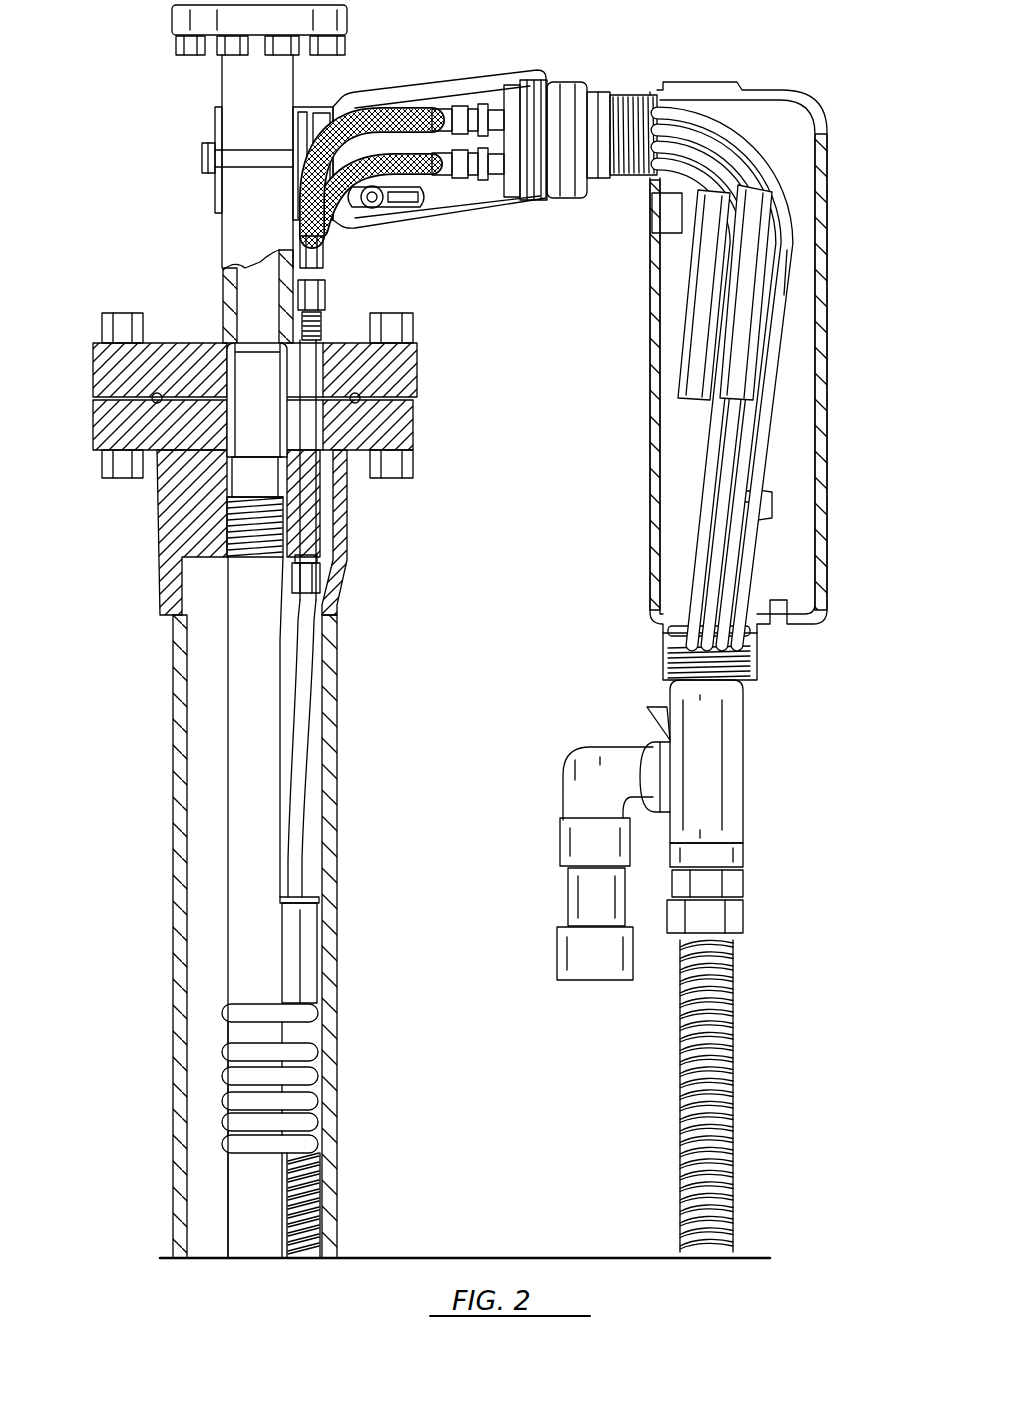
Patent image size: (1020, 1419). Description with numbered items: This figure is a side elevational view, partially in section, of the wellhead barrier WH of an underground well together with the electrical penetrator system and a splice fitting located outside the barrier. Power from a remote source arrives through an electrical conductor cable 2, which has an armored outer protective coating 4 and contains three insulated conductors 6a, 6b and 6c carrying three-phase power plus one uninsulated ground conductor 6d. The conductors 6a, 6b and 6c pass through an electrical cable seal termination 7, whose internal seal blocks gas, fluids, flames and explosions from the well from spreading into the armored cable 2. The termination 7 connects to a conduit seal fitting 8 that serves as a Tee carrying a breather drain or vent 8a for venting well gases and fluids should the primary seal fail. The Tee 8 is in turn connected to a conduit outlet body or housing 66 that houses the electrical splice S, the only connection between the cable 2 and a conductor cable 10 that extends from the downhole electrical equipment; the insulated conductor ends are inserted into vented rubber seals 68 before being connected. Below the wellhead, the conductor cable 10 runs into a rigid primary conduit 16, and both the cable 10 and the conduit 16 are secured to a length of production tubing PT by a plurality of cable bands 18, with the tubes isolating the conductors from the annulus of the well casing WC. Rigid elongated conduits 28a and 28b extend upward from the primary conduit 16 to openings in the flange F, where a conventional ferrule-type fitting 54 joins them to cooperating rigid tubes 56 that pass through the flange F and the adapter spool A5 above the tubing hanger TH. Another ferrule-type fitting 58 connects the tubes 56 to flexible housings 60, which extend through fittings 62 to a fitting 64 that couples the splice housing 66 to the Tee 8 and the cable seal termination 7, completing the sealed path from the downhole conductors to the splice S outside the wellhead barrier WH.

The wellhead barrier WH is at (132, 298).
The flexible housings 60 is at (358, 118).
The fittings 62 is at (508, 92).
The fitting 64 is at (570, 92).
The conduit outlet body or housing 66 is at (775, 92).
The vented rubber seals 68 is at (757, 248).
The electrical splice S is at (790, 272).
The insulated conductor 6a is at (688, 494).
The insulated conductor 6b is at (713, 430).
The insulated conductor 6c is at (727, 460).
The uninsulated ground conductor 6d is at (740, 587).
The adapter spool A5 is at (365, 330).
The ferrule-type fitting 58 is at (330, 292).
The flange F is at (413, 432).
The tubing hanger TH is at (185, 507).
The rigid tubes 56 is at (310, 413).
The ferrule-type fitting 54 is at (320, 575).
The production tubing PT is at (228, 833).
The well casing WC is at (337, 820).
The rigid elongated conduit 28a is at (307, 678).
The rigid elongated conduit 28b is at (307, 783).
The rigid primary conduit 16 is at (307, 945).
The cable bands 18 is at (317, 1013).
The conductor cable 10 is at (327, 1204).
The conduit seal fitting 8 is at (748, 750).
The breather drain or vent 8a is at (563, 847).
The electrical cable seal termination 7 is at (735, 883).
The outer protective coating 4 is at (723, 957).
The electrical conductor cable 2 is at (741, 1082).